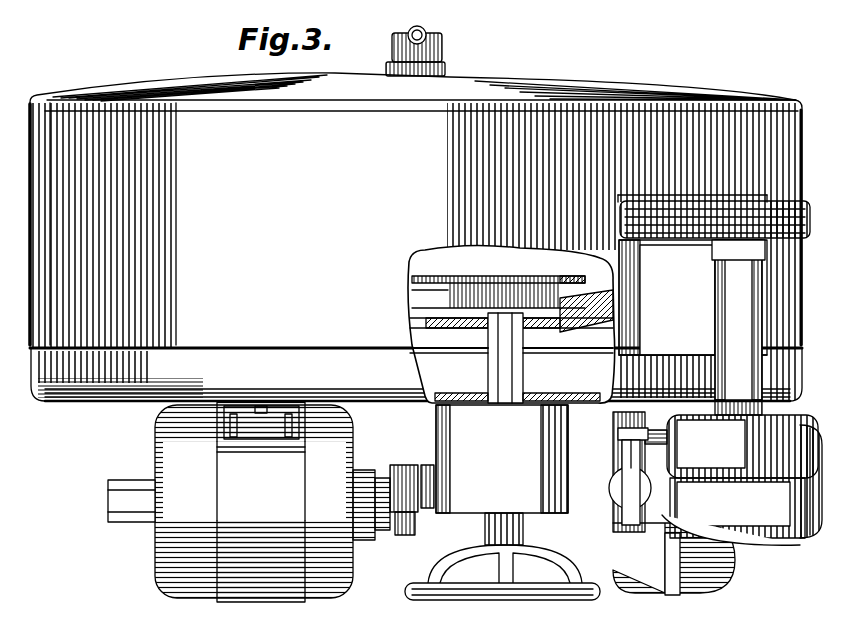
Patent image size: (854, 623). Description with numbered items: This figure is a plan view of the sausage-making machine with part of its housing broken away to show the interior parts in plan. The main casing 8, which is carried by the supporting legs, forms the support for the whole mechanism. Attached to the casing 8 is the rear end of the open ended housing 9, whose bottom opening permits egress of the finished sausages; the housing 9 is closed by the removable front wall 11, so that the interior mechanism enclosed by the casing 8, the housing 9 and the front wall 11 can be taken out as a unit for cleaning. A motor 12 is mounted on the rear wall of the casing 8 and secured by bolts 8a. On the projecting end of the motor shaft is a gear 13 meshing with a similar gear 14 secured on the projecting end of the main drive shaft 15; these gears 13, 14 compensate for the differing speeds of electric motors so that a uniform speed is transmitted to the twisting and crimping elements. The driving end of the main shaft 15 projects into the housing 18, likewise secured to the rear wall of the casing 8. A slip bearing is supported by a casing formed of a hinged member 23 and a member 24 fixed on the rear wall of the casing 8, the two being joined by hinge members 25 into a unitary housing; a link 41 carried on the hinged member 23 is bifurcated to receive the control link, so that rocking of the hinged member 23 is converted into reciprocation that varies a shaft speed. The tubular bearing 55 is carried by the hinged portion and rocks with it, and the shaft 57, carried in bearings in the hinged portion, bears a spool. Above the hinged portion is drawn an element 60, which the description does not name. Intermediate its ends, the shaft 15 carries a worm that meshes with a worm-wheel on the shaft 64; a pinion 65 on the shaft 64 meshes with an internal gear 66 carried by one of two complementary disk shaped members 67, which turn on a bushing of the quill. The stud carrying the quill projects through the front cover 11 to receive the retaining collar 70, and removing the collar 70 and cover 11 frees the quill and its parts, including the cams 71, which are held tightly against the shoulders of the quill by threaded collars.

The main casing 8 is at (416, 374).
The bolts 8a is at (265, 412).
The open ended housing 9 is at (416, 236).
The front wall or cover 11 is at (566, 82).
The motor 12 is at (249, 502).
The gear 13 is at (400, 536).
The gear 14 is at (405, 470).
The main drive shaft 15 is at (502, 502).
The housing 18 is at (652, 593).
The hinged member 23 is at (740, 480).
The fixed member 24 is at (796, 541).
The hinge members 25 is at (620, 437).
The link 41 is at (625, 453).
The tubular bearing 55 is at (718, 333).
The shaft 57 is at (637, 283).
The heating element 60 is at (688, 238).
The shaft 64 is at (490, 316).
The pinion 65 is at (478, 279).
The internal gear 66 is at (560, 329).
The complementary disk shaped members 67 is at (566, 279).
The retaining collar 70 is at (433, 55).
The cams 71 is at (600, 312).